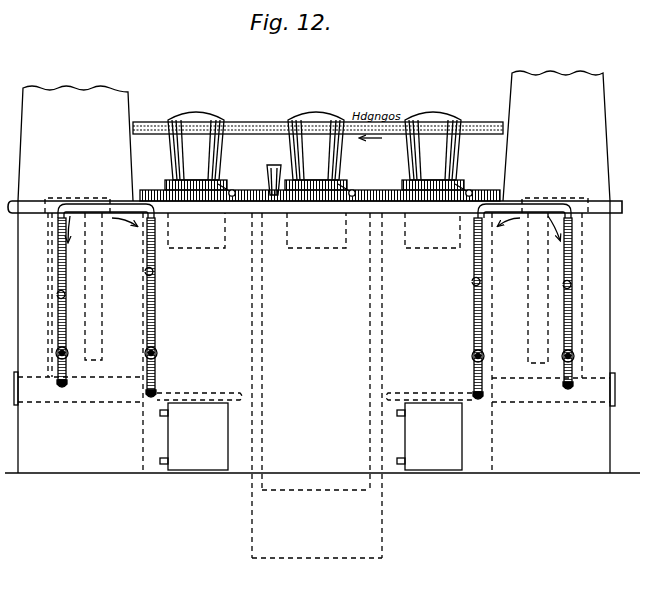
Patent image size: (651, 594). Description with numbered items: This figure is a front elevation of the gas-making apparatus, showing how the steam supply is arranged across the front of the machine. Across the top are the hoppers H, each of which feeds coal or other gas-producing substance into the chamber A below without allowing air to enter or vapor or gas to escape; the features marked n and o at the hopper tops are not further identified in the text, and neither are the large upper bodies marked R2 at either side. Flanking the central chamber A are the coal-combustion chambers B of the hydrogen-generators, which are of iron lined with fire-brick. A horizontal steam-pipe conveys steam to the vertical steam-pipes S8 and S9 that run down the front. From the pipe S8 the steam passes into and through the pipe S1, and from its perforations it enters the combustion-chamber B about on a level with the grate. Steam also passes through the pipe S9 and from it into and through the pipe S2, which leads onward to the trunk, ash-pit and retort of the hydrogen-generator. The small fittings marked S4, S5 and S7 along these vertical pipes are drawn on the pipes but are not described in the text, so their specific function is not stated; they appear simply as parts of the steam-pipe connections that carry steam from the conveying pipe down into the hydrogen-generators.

The reservoir tank R2 is at (314, 136).
The hopper H is at (318, 154).
The hopper inlet n is at (283, 150).
The drip funnel o is at (275, 175).
The chamber A is at (316, 343).
The coal-combustion chamber B is at (317, 343).
The steam-pipe S1 is at (314, 334).
The pipe S2 is at (315, 308).
The pipe foot S4 is at (272, 370).
The valve S5 is at (277, 355).
The valve S7 is at (329, 355).
The vertical steam-pipe S8 is at (362, 321).
The vertical steam-pipe S9 is at (322, 289).